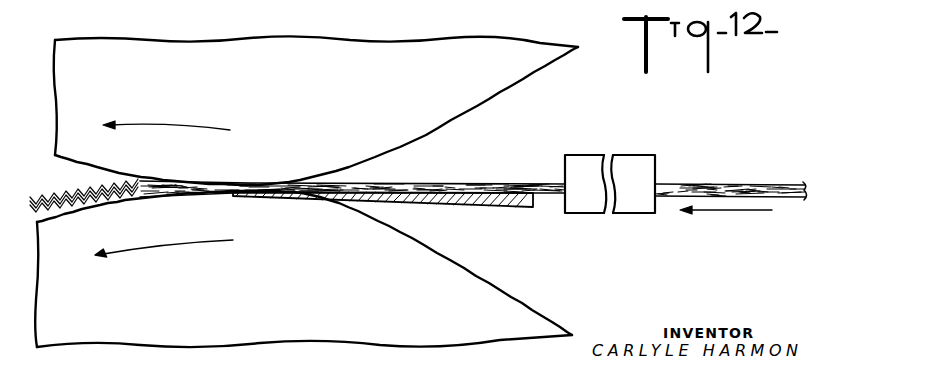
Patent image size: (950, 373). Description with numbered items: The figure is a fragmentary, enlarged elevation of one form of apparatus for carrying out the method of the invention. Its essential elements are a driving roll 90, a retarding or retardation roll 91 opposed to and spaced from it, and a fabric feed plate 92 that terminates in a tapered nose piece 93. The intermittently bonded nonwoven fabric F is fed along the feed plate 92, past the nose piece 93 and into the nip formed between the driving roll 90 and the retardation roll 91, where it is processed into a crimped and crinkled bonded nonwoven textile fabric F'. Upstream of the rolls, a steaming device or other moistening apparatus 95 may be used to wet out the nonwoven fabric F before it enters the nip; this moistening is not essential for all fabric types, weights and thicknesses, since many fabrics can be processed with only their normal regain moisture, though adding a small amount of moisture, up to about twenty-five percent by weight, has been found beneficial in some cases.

The driving roll 90 is at (233, 97).
The retarding roll 91 is at (239, 307).
The fabric feed plate 92 is at (525, 206).
The tapered nose piece 93 is at (290, 195).
The moistening apparatus 95 is at (604, 156).
The nonwoven fabric F is at (473, 168).
The crimped and crinkled bonded nonwoven textile fabric F' is at (84, 185).